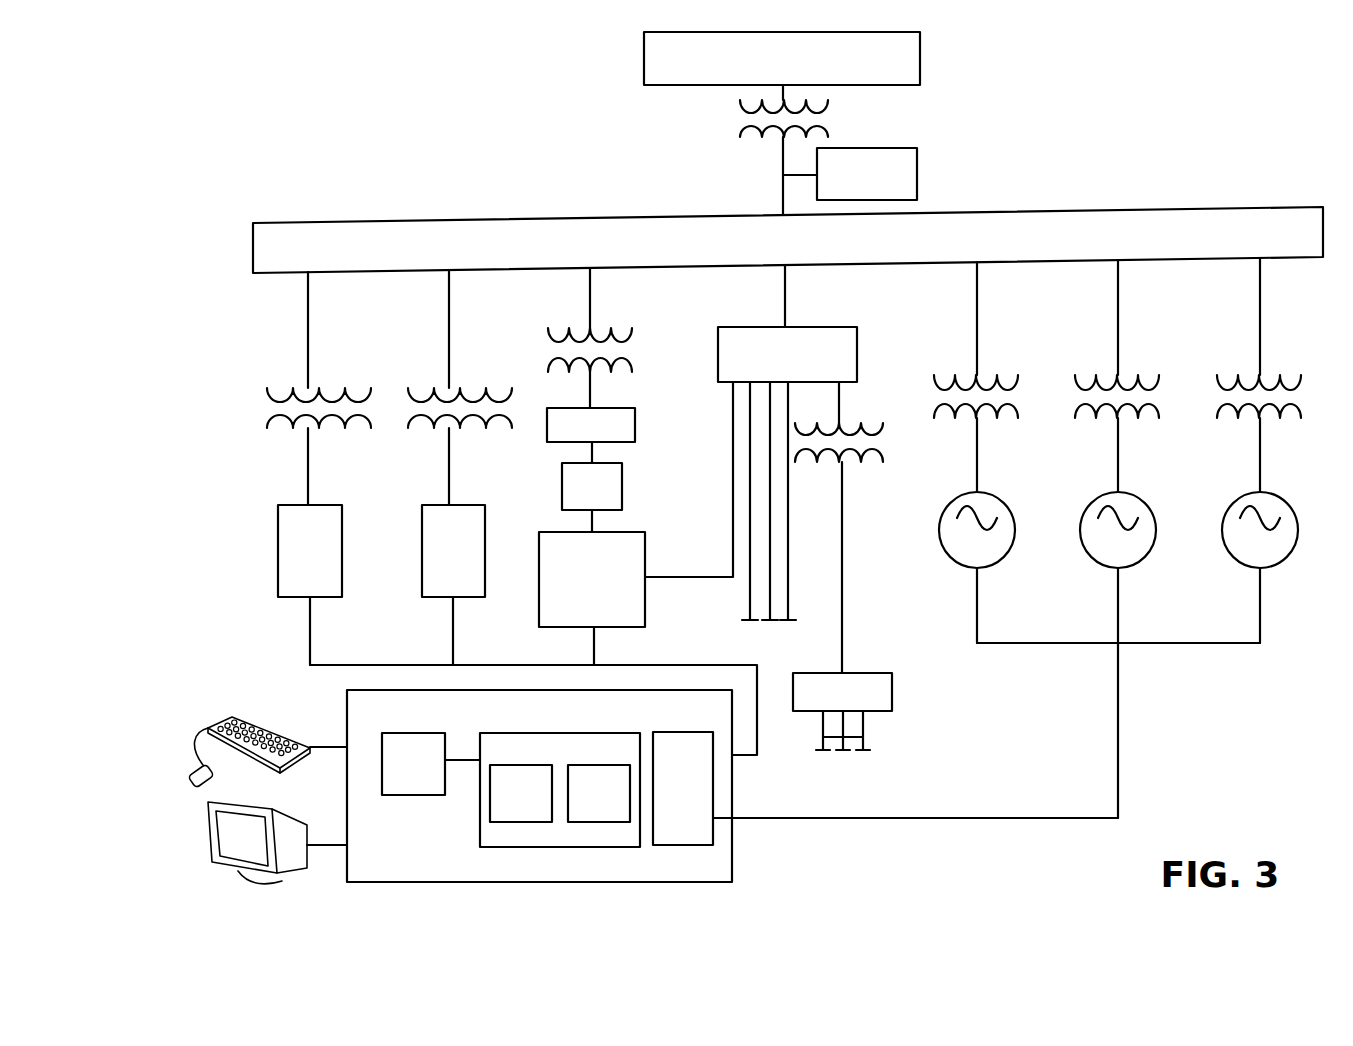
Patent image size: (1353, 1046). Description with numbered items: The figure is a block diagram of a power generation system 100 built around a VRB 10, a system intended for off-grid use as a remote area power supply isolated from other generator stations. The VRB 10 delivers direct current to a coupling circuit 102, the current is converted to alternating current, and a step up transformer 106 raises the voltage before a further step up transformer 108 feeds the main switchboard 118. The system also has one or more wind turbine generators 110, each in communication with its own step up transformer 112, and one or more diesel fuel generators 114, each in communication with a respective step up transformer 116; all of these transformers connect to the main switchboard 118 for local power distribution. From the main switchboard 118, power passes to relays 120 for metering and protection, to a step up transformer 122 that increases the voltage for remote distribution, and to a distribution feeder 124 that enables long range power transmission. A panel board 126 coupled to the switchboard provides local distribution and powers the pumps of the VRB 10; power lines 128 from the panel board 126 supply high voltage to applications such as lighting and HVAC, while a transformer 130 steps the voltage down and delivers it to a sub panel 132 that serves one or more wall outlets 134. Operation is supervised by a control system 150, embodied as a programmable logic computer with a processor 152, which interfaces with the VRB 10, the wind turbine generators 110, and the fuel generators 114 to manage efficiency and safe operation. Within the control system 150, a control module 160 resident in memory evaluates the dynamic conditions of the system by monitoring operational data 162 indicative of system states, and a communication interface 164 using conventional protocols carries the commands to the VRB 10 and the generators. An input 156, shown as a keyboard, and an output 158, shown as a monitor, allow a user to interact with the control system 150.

The power generation system 100 is at (263, 110).
The distribution feeder 124 is at (762, 73).
The step up transformer 122 is at (740, 128).
The relays 120 is at (847, 186).
The main switchboard 118 is at (765, 251).
The step up transformer 116 is at (364, 392).
The diesel fuel generator 114 is at (290, 562).
The step up transformer 108 is at (633, 352).
The step up transformer 106 is at (571, 438).
The coupling circuit 102 is at (572, 499).
The VRB 10 is at (584, 597).
The panel board 126 is at (767, 367).
The power lines 128 is at (790, 598).
The transformer 130 is at (872, 418).
The sub panel 132 is at (823, 704).
The wall outlets 134 is at (823, 737).
The step up transformer 112 is at (1010, 418).
The wind turbine generator 110 is at (959, 560).
The control system 150 is at (535, 723).
The processor 152 is at (393, 776).
The control module 160 is at (501, 805).
The operational data 162 is at (579, 805).
The communication interface 164 is at (663, 802).
The input 156 is at (248, 722).
The output 158 is at (250, 875).